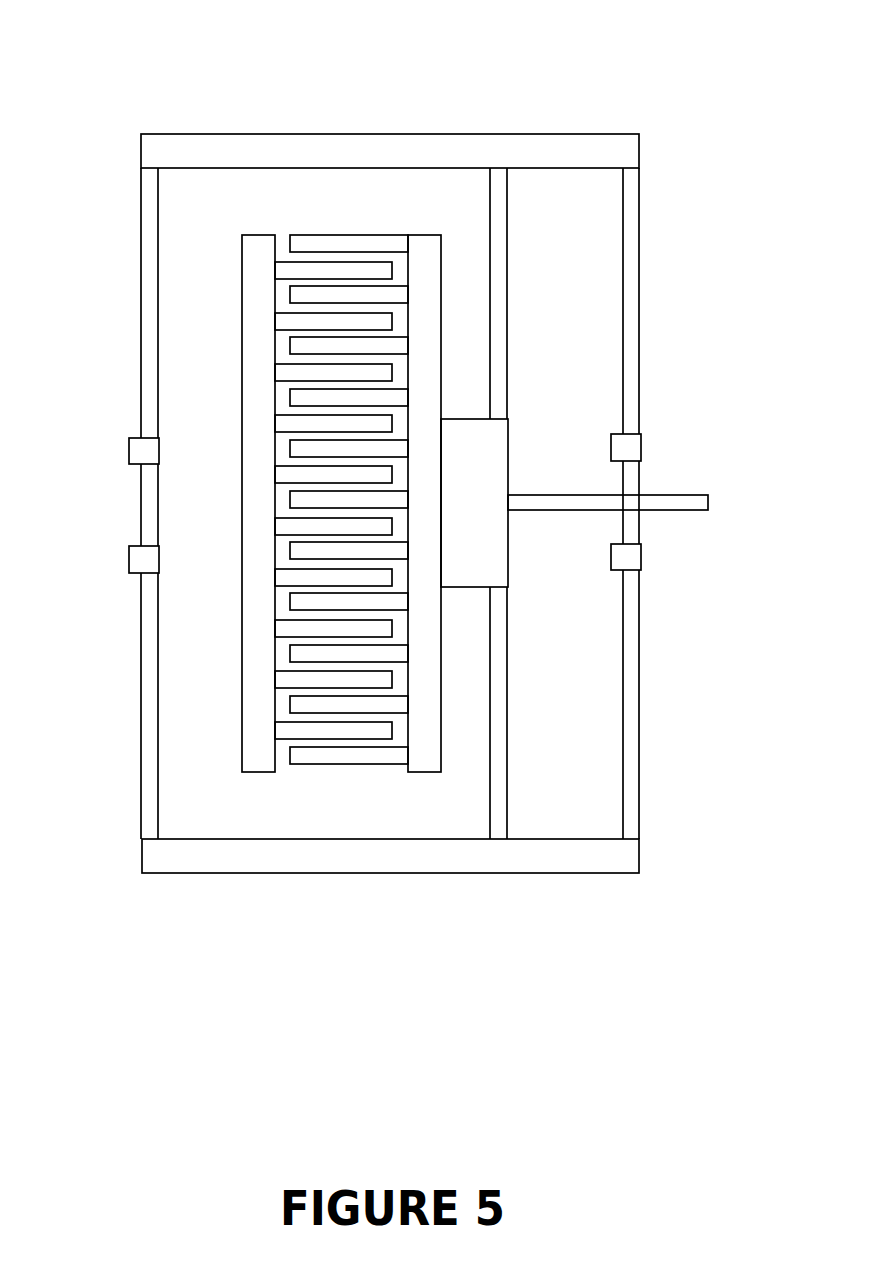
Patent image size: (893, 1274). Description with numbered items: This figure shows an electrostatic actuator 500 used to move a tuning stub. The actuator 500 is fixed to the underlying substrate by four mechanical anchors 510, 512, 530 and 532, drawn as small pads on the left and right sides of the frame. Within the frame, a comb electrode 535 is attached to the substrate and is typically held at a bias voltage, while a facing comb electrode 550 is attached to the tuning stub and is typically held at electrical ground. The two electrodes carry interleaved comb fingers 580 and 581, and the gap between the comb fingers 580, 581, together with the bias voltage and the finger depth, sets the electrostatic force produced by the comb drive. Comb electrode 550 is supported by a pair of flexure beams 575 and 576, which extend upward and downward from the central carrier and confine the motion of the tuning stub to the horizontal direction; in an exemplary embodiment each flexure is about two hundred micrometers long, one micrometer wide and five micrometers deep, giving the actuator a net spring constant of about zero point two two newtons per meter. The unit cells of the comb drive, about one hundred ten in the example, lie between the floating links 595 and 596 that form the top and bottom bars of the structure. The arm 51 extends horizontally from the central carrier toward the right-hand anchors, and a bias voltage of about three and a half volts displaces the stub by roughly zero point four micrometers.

The electrostatic actuator 500 is at (300, 56).
The floating link 595 is at (639, 143).
The floating link 596 is at (639, 856).
The flexure beam 575 is at (507, 237).
The flexure beam 576 is at (507, 720).
The comb electrode 550 is at (359, 497).
The comb electrode 535 is at (305, 526).
The comb finger 580 is at (357, 730).
The comb finger 581 is at (305, 763).
The mechanical anchor 530 is at (129, 450).
The mechanical anchor 532 is at (129, 563).
The mechanical anchor 512 is at (641, 447).
The mechanical anchor 510 is at (641, 558).
The actuator arm 51 is at (708, 503).